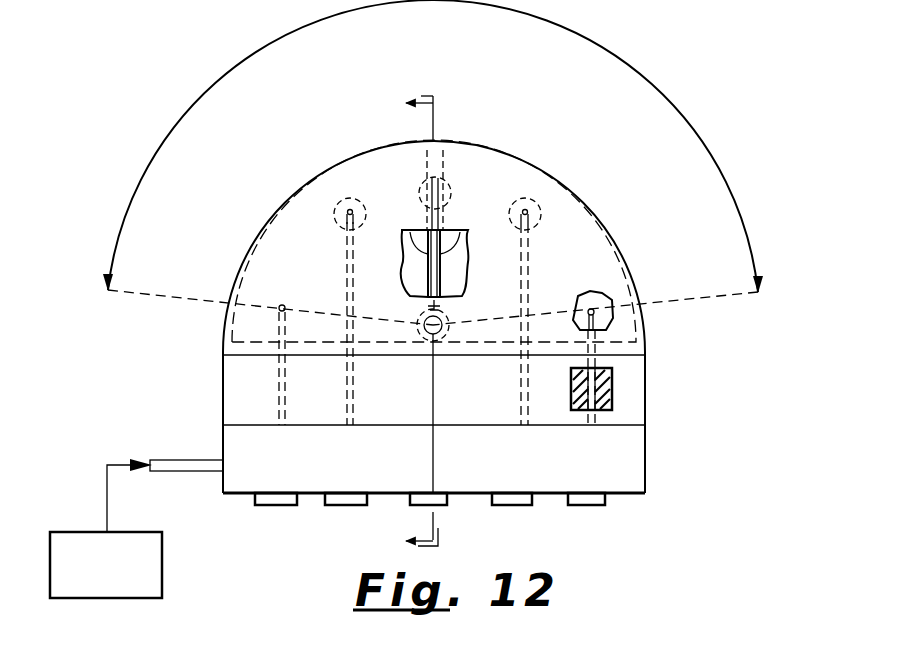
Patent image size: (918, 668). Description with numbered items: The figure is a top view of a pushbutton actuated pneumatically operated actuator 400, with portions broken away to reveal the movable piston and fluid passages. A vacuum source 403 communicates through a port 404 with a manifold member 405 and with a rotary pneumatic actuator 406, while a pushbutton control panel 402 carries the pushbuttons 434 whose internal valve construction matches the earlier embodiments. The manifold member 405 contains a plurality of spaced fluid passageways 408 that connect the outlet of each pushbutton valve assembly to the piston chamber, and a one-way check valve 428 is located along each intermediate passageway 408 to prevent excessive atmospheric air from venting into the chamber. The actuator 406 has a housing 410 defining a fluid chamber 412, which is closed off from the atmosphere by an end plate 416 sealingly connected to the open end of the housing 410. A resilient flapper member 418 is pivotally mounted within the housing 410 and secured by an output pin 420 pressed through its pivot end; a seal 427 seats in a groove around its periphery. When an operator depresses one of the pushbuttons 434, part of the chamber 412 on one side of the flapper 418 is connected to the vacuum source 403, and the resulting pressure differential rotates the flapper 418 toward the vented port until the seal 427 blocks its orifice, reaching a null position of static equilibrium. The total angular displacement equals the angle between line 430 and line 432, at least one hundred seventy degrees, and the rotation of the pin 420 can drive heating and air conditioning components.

The pushbutton actuated pneumatically operated actuator 400 is at (404, 345).
The pushbutton control panel 402 is at (652, 456).
The vacuum source 403 is at (165, 558).
The port 404 is at (215, 460).
The manifold member 405 is at (650, 383).
The rotary pneumatic actuator 406 is at (627, 254).
The fluid passageways 408 is at (612, 403).
The housing 410 is at (298, 192).
The fluid chamber 412 is at (586, 238).
The end plate 416 is at (243, 357).
The flapper member 418 is at (462, 232).
The output pin 420 is at (426, 318).
The seal 427 is at (420, 230).
The one-way check valve 428 is at (560, 299).
The line 430 is at (165, 299).
The line 432 is at (692, 309).
The pushbuttons 434 is at (611, 509).